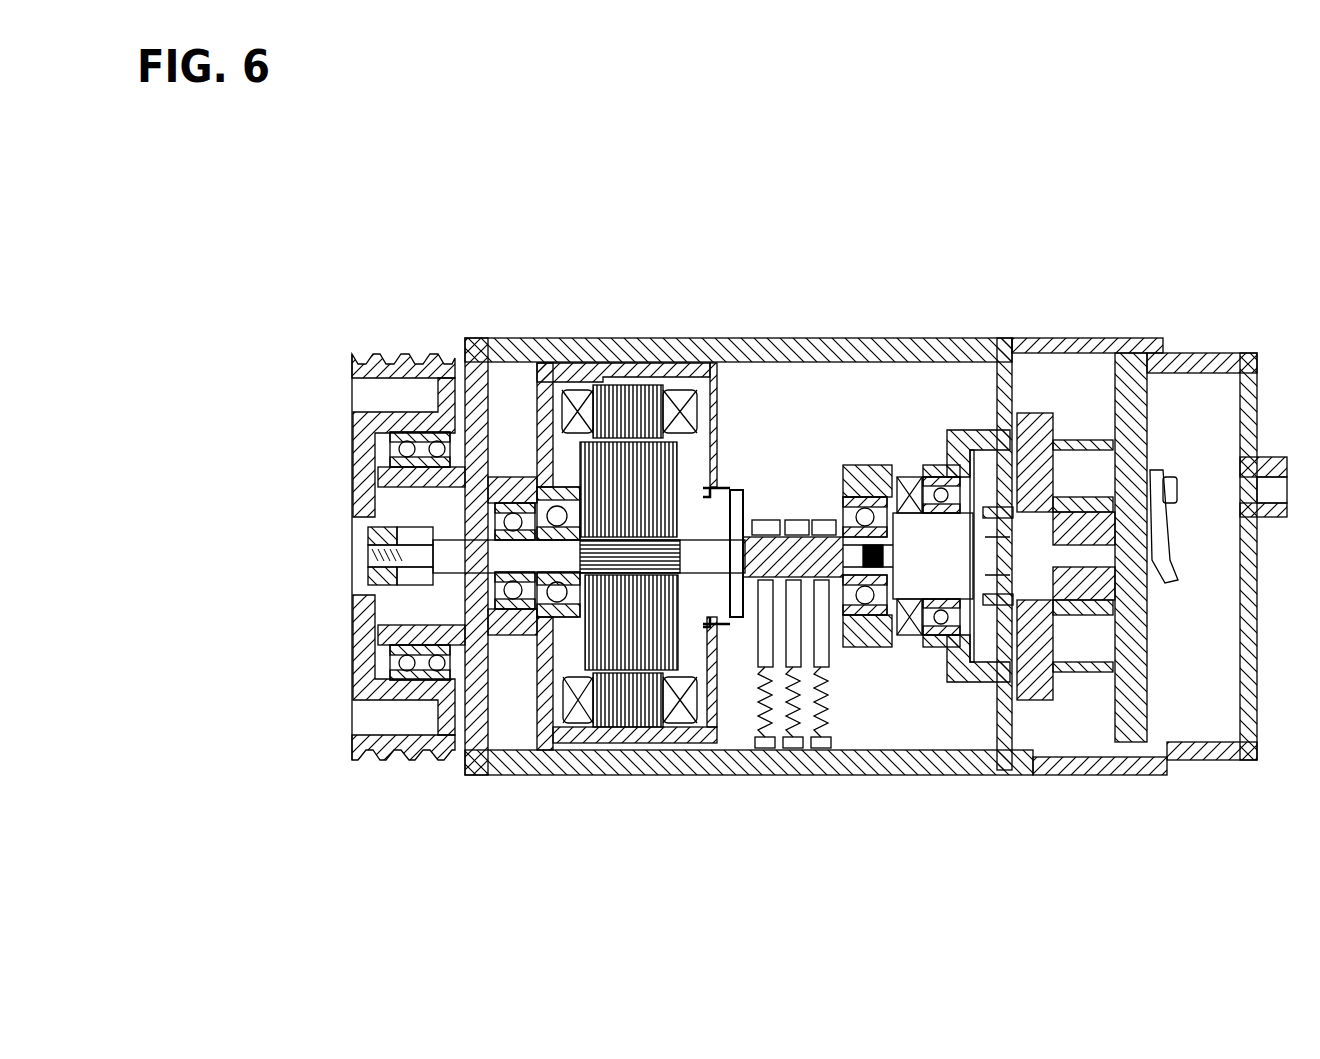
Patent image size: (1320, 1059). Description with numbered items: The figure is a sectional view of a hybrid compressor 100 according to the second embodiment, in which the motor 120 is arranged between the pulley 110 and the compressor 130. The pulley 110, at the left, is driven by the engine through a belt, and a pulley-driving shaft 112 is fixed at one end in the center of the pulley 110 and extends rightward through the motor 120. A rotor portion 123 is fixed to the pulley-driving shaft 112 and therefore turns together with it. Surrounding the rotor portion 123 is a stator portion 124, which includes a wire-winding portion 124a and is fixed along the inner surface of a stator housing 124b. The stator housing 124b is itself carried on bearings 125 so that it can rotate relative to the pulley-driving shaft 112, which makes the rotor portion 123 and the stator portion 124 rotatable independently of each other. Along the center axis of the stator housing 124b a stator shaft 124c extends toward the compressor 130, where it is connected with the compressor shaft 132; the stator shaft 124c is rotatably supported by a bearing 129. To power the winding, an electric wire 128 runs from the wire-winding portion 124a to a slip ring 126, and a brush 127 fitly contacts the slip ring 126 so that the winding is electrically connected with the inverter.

The motor unit 100 is at (395, 325).
The pulley 110 is at (425, 348).
The pulley-driving shaft 112 is at (522, 552).
The motor housing 120 is at (812, 329).
The rotor portion 123 is at (703, 372).
The stator portion 124 is at (692, 362).
The wire-winding portion 124a is at (653, 438).
The stator housing 124b is at (588, 393).
The stator shaft 124c is at (813, 517).
The bearings 125 is at (563, 740).
The slip ring 126 is at (853, 343).
The brush 127 is at (782, 690).
The electric wire 128 is at (773, 510).
The bearing 129 is at (863, 617).
The compressor 130 is at (1087, 328).
The compressor shaft 132 is at (928, 532).